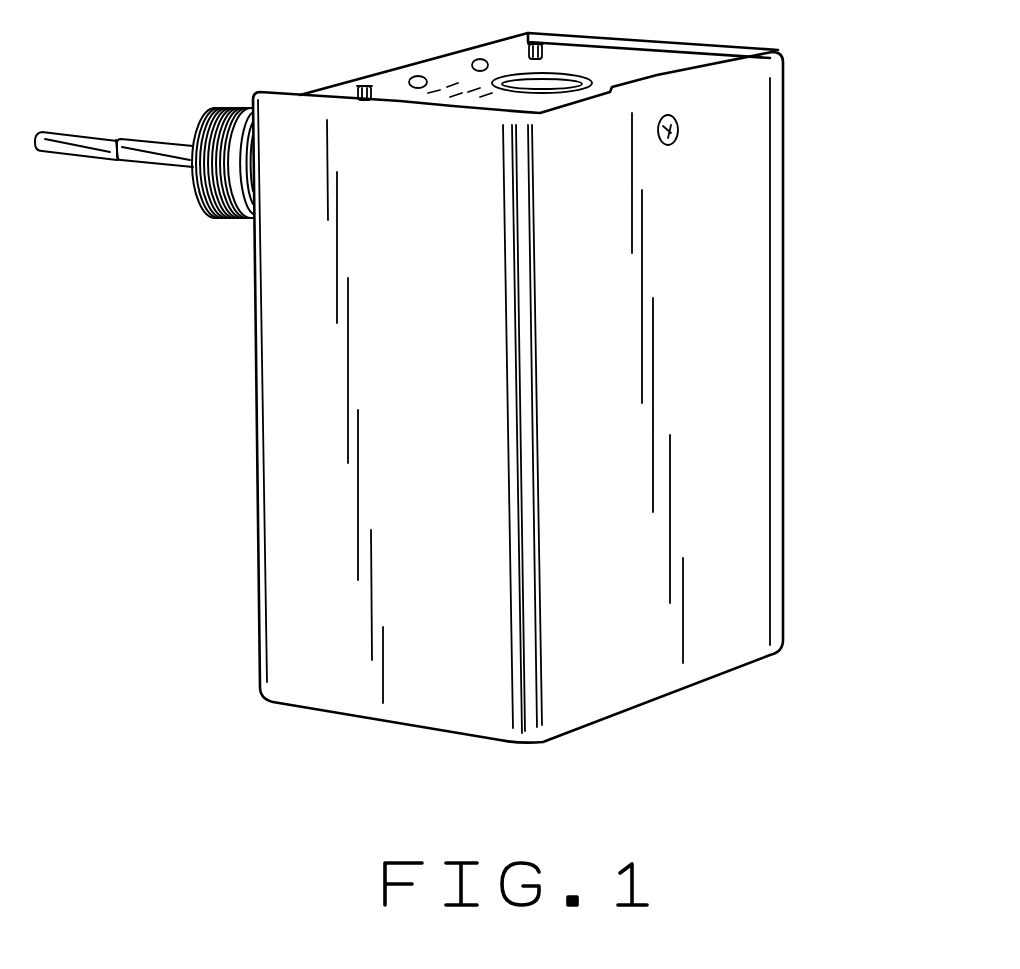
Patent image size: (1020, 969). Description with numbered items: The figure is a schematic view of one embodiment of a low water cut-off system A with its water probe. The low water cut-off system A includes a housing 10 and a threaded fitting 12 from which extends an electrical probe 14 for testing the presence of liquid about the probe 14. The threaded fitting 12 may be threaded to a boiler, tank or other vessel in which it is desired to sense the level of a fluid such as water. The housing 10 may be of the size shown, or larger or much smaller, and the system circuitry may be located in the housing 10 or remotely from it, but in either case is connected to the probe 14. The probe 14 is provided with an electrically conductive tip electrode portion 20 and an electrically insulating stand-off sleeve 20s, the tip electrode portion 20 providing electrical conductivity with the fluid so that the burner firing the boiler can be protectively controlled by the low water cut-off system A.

The housing 10 is at (783, 362).
The threaded fitting 12 is at (225, 222).
The electrical probe 14 is at (110, 155).
The electrically conductive tip electrode portion 20 is at (70, 130).
The electrically insulating stand-off sleeve 20s is at (152, 167).
The low water cut-off system A is at (225, 519).